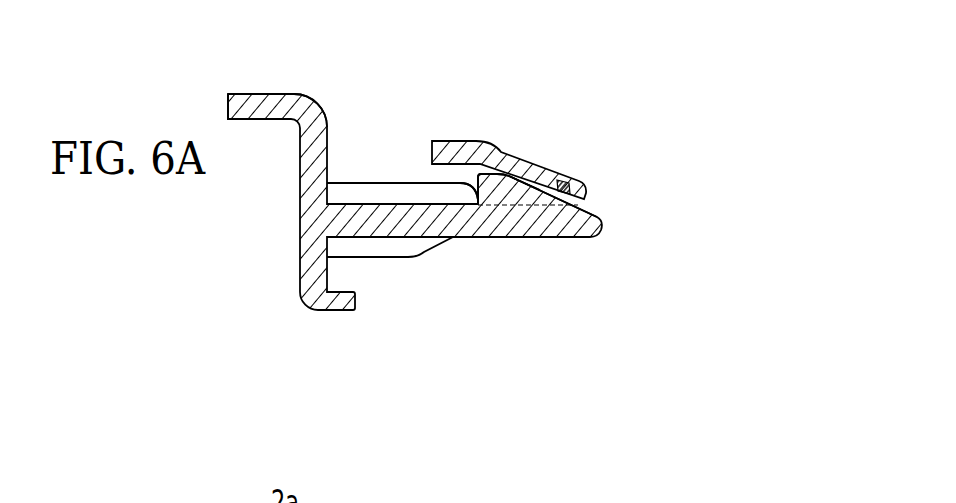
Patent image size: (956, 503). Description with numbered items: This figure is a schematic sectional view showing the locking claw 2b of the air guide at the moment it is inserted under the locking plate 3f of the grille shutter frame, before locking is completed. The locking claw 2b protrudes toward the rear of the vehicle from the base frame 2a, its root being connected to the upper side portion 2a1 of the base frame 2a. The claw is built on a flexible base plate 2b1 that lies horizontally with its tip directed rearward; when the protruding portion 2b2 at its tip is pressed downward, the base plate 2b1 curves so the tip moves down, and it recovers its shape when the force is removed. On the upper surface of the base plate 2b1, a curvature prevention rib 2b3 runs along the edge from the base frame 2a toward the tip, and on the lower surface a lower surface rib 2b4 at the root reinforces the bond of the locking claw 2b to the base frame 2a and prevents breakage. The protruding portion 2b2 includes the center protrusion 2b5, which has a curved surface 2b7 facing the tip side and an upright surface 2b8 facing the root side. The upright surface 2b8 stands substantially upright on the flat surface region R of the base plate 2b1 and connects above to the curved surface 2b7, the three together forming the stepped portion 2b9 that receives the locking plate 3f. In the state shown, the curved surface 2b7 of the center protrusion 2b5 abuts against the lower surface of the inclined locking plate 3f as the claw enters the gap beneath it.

The base frame 2a is at (248, 88).
The upper side portion 2a1 is at (308, 118).
The locking claw 2b is at (615, 204).
The base plate 2b1 is at (468, 238).
The protruding portion 2b2 is at (568, 182).
The curvature prevention rib 2b3 is at (350, 182).
The lower surface rib 2b4 is at (392, 258).
The center protrusion 2b5 is at (509, 186).
The curved surface 2b7 is at (500, 172).
The upright surface 2b8 is at (474, 184).
The stepped portion 2b9 is at (452, 173).
The locking plate 3f is at (544, 168).
The flat surface region R is at (402, 204).